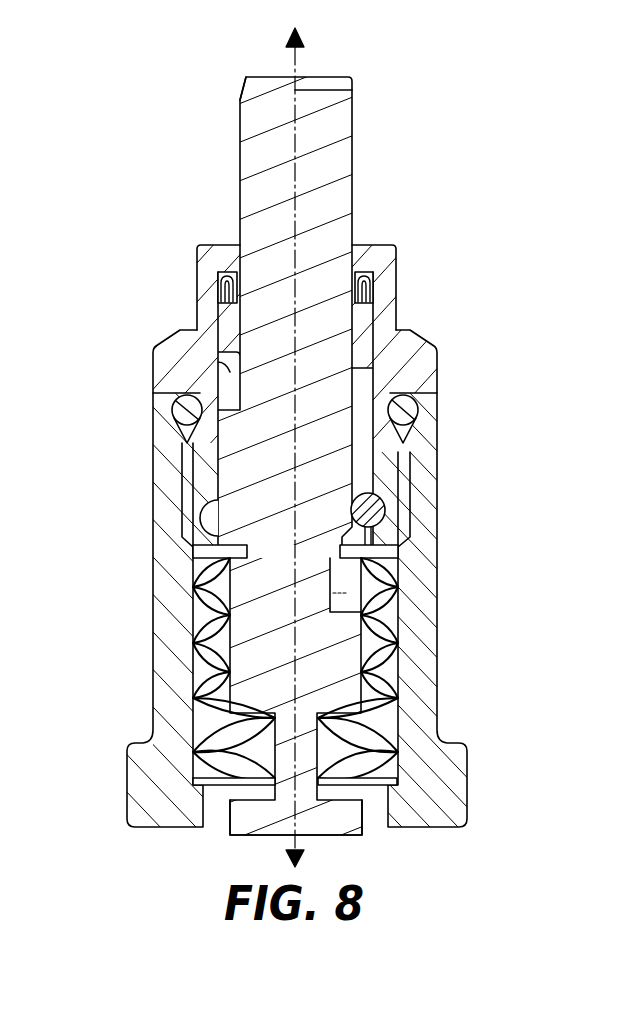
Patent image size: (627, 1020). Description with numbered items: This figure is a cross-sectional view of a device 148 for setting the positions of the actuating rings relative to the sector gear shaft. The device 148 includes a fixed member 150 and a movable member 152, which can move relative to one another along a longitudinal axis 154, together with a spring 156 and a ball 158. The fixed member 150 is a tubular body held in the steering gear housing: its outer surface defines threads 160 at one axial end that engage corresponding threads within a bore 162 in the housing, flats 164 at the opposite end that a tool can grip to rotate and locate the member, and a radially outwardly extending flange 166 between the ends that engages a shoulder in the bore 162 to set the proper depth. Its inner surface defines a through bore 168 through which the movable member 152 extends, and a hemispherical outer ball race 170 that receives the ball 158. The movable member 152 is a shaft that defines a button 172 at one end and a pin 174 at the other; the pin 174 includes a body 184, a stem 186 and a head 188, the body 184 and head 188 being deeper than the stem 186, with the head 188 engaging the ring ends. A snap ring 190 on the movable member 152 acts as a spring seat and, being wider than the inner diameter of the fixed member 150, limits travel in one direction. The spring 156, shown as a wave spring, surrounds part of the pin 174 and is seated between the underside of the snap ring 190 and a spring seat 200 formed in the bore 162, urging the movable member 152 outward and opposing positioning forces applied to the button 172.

The device 148 is at (478, 267).
The fixed member 150 is at (385, 257).
The movable member 152 is at (343, 170).
The longitudinal axis 154 is at (357, 89).
The spring 156 is at (200, 583).
The ball 158 is at (383, 508).
The threads 160 is at (405, 452).
The bore 162 is at (383, 618).
The flats 164 is at (208, 299).
The flange 166 is at (160, 362).
The through bore 168 is at (230, 249).
The outer ball race 170 is at (203, 508).
The button 172 is at (257, 137).
The pin 174 is at (348, 822).
The body 184 is at (253, 695).
The stem 186 is at (282, 757).
The head 188 is at (243, 818).
The snap ring 190 is at (208, 555).
The spring seat 200 is at (378, 778).